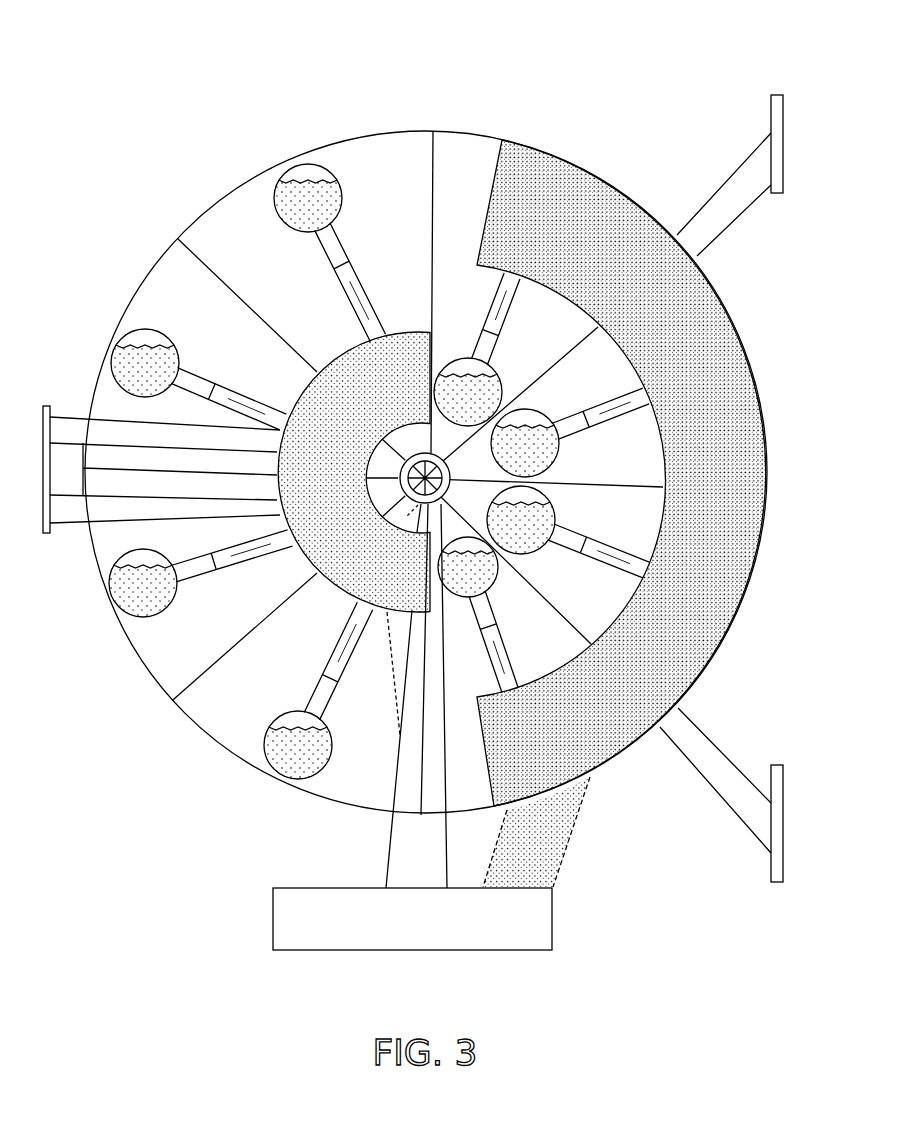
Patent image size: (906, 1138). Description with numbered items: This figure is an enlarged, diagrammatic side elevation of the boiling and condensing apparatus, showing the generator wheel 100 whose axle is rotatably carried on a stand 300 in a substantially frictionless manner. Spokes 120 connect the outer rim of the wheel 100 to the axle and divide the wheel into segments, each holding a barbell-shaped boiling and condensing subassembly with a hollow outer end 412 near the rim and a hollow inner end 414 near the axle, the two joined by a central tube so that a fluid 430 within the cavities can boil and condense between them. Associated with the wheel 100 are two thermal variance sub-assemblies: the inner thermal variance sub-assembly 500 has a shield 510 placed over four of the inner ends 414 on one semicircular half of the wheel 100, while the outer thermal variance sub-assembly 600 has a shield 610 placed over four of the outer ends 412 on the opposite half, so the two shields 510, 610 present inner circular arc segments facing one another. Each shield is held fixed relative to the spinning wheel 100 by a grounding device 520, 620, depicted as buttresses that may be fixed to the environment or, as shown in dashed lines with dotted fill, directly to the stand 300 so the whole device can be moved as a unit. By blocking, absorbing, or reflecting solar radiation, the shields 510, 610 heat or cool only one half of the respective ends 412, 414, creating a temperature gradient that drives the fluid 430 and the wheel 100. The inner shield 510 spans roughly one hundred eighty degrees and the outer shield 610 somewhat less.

The generator wheel 100 is at (118, 83).
The spokes 120 is at (178, 690).
The stand 300 is at (292, 951).
The outer end 412 is at (306, 163).
The inner end 414 is at (538, 409).
The fluid 430 is at (276, 197).
The inner thermal variance sub-assembly 500 is at (66, 404).
The shield 510 is at (412, 332).
The grounding device 520 is at (64, 530).
The outer thermal variance sub-assembly 600 is at (648, 123).
The shield 610 is at (540, 146).
The grounding device 620 is at (573, 827).